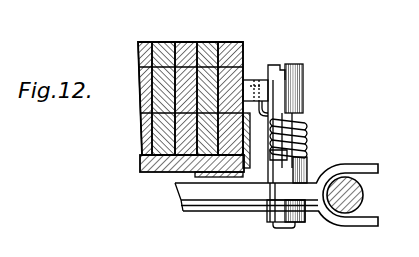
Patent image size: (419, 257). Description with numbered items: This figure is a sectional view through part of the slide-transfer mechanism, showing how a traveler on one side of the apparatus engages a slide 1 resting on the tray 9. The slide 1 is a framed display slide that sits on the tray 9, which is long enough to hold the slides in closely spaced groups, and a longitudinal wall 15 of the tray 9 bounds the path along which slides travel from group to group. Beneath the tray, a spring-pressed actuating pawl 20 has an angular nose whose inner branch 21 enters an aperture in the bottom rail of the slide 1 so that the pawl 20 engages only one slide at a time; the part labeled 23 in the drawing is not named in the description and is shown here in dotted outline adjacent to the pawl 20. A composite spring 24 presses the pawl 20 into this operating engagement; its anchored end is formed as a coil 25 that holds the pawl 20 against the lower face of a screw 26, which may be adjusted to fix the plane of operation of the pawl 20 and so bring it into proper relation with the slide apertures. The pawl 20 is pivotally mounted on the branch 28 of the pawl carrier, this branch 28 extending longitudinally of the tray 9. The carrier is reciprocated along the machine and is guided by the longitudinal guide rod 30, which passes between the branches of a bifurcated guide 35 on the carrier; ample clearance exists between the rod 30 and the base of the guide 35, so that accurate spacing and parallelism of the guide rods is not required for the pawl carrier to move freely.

The slide 1 is at (223, 41).
The tray 9 is at (165, 171).
The longitudinal wall of the tray 15 is at (246, 139).
The actuating pawl 20 is at (271, 78).
The inner branch of pawl nose 21 is at (246, 80).
The terminal bracket 23 is at (258, 76).
The spring 24 is at (272, 110).
The coil 25 is at (305, 135).
The screw 26 is at (303, 68).
The branch of pawl carrier 28 is at (213, 190).
The guide rod 30 is at (363, 191).
The bifurcated guide 35 is at (357, 165).